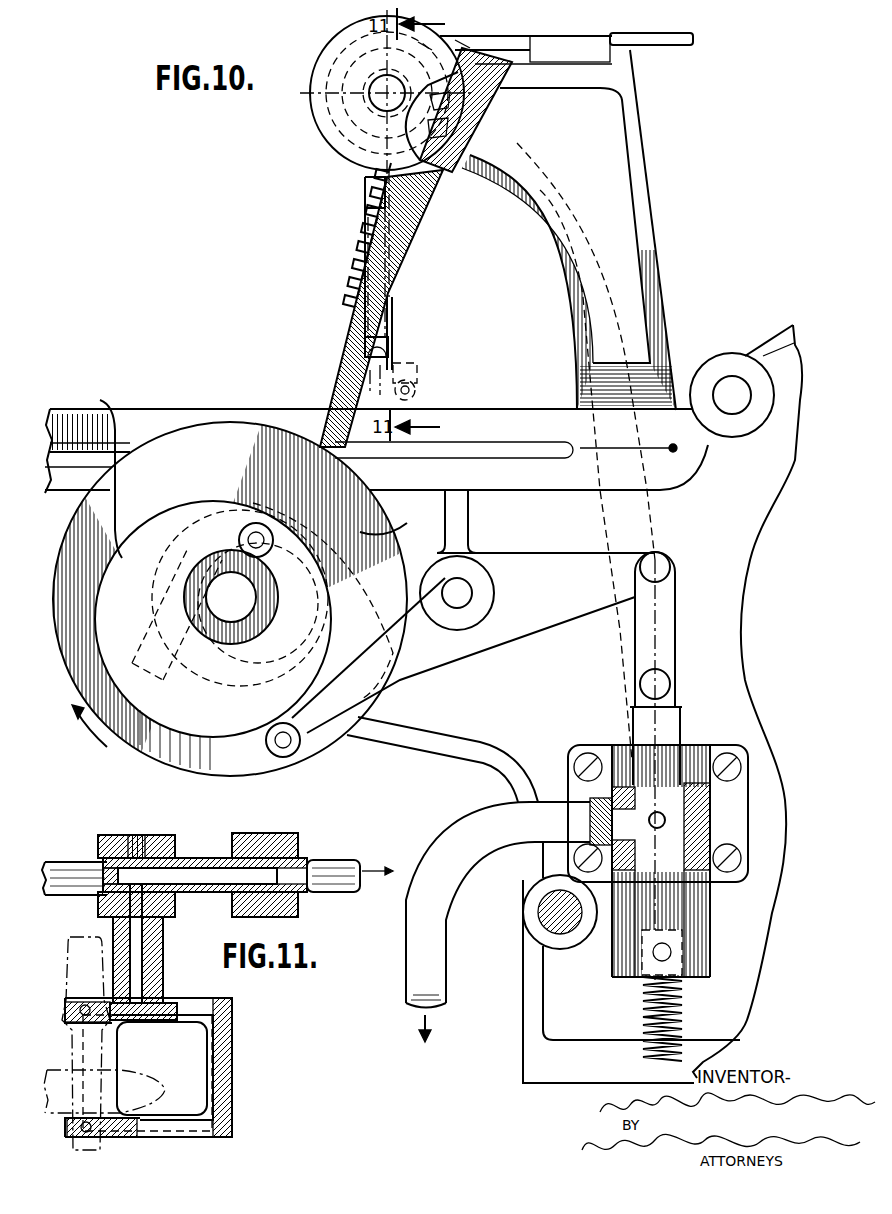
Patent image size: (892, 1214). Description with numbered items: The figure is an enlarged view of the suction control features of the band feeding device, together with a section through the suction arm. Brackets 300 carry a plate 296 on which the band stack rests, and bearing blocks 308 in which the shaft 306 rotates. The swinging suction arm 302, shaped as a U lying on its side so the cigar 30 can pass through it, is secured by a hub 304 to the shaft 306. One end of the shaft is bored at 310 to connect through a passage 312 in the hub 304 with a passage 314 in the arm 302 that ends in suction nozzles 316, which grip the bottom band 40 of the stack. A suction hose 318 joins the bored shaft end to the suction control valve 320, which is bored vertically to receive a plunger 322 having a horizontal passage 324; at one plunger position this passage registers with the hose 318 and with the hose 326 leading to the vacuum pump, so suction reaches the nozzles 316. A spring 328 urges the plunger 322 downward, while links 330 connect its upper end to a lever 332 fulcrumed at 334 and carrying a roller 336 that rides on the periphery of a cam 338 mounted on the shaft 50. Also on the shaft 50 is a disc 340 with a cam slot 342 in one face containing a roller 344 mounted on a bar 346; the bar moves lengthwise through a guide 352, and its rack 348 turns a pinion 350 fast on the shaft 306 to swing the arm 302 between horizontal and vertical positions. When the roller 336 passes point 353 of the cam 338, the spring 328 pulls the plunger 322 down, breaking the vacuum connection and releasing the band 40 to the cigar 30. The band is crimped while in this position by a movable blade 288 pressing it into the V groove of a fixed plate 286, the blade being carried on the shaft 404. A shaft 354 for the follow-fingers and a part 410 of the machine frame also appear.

In FIG. 11, the cigar 30 is at (135, 1082).
In FIG. 10, the band 40 is at (393, 318).
In FIG. 11, the band 40 is at (68, 1022).
In FIG. 10, the shaft 50 is at (214, 590).
In FIG. 10, the fixed plate 286 is at (378, 375).
In FIG. 10, the movable blade 288 is at (420, 362).
In FIG. 10, the plate 296 is at (628, 33).
In FIG. 10, the brackets 300 is at (640, 160).
In FIG. 10, the suction arm 302 is at (365, 195).
In FIG. 11, the suction arm 302 is at (232, 1082).
In FIG. 10, the hub 304 is at (370, 93).
In FIG. 11, the hub 304 is at (175, 825).
In FIG. 10, the shaft 306 is at (382, 100).
In FIG. 11, the shaft 306 is at (65, 870).
In FIG. 10, the bearing blocks 308 is at (425, 46).
In FIG. 11, the bearing blocks 308 is at (265, 845).
In FIG. 11, the bore 310 is at (200, 870).
In FIG. 11, the passage 312 is at (140, 934).
In FIG. 11, the passage 314 is at (155, 1015).
In FIG. 11, the suction nozzles 316 is at (80, 1005).
In FIG. 10, the suction hose 318 is at (488, 172).
In FIG. 11, the suction hose 318 is at (335, 862).
In FIG. 10, the suction control valve 320 is at (700, 820).
In FIG. 10, the plunger 322 is at (678, 727).
In FIG. 10, the horizontal passage 324 is at (692, 836).
In FIG. 10, the hose 326 is at (449, 900).
In FIG. 10, the spring 328 is at (680, 1005).
In FIG. 10, the links 330 is at (670, 617).
In FIG. 10, the lever 332 is at (498, 630).
In FIG. 10, the fulcrum 334 is at (462, 590).
In FIG. 10, the roller 336 is at (300, 752).
In FIG. 10, the cam 338 is at (87, 474).
In FIG. 10, the disc 340 is at (177, 432).
In FIG. 10, the cam slot 342 is at (326, 590).
In FIG. 10, the roller 344 is at (238, 522).
In FIG. 10, the bar 346 is at (330, 345).
In FIG. 10, the rack 348 is at (358, 267).
In FIG. 10, the pinion 350 is at (460, 108).
In FIG. 10, the guide 352 is at (526, 38).
In FIG. 10, the point of cam 353 is at (393, 519).
In FIG. 10, the shaft 354 is at (722, 388).
In FIG. 10, the shaft 404 is at (416, 393).
In FIG. 10, the part of machine frame 410 is at (247, 411).